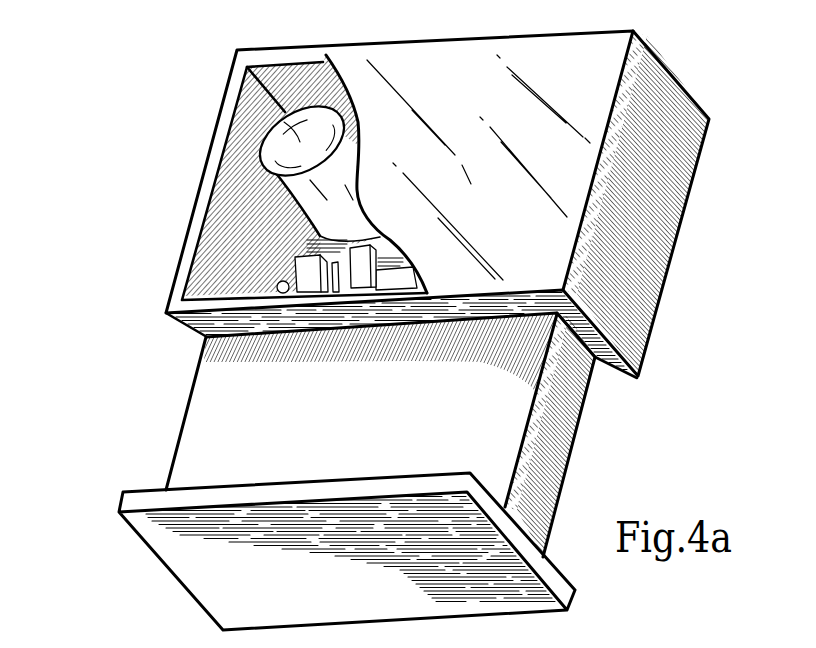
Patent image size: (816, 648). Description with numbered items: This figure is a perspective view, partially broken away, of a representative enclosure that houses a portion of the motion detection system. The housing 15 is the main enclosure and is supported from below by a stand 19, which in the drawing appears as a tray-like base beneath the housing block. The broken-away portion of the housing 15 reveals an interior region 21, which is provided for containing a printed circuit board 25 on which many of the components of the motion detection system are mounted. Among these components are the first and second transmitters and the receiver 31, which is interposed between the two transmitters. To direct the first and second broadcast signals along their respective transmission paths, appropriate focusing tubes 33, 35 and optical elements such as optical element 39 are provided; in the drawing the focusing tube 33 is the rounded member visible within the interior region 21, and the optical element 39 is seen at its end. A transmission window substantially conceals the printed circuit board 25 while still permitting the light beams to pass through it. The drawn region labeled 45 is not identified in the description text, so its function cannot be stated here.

The housing 15 is at (366, 329).
The stand 19 is at (225, 443).
The interior region 21 is at (220, 232).
The printed circuit board 25 is at (300, 240).
The focusing tube 33 is at (343, 150).
The focusing tube 35 is at (433, 647).
The optical element 39 is at (293, 128).
The housing block 45 is at (559, 72).
The receiver 31 is at (555, 644).